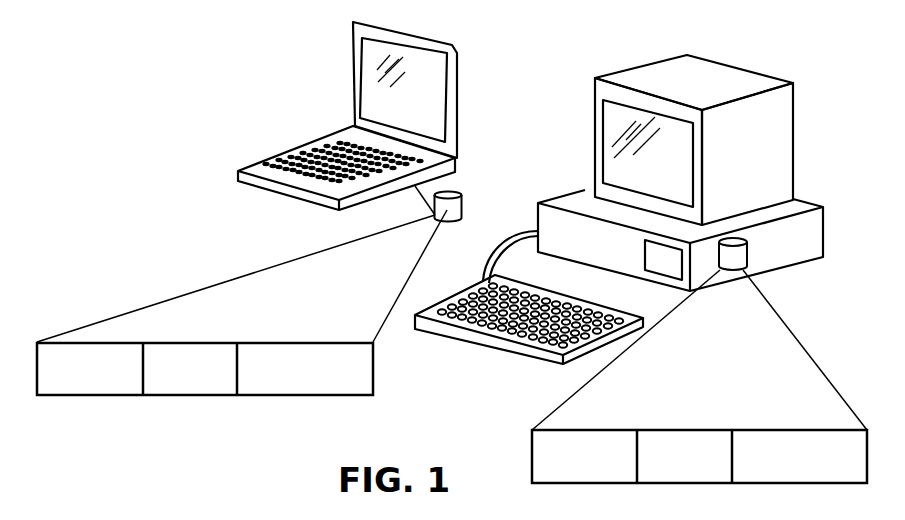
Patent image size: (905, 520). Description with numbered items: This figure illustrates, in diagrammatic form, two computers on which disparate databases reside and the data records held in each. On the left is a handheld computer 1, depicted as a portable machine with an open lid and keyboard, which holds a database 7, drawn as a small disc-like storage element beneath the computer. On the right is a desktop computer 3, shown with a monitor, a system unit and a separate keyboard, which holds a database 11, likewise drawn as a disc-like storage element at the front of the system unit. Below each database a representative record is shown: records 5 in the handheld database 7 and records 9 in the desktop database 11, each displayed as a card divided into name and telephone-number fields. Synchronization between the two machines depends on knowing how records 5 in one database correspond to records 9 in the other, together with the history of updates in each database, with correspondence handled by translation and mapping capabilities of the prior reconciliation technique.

The handheld computer 1 is at (458, 53).
The desktop computer 3 is at (595, 105).
The records 5 is at (373, 370).
The database 7 is at (463, 202).
The records 9 is at (532, 455).
The database 11 is at (748, 250).